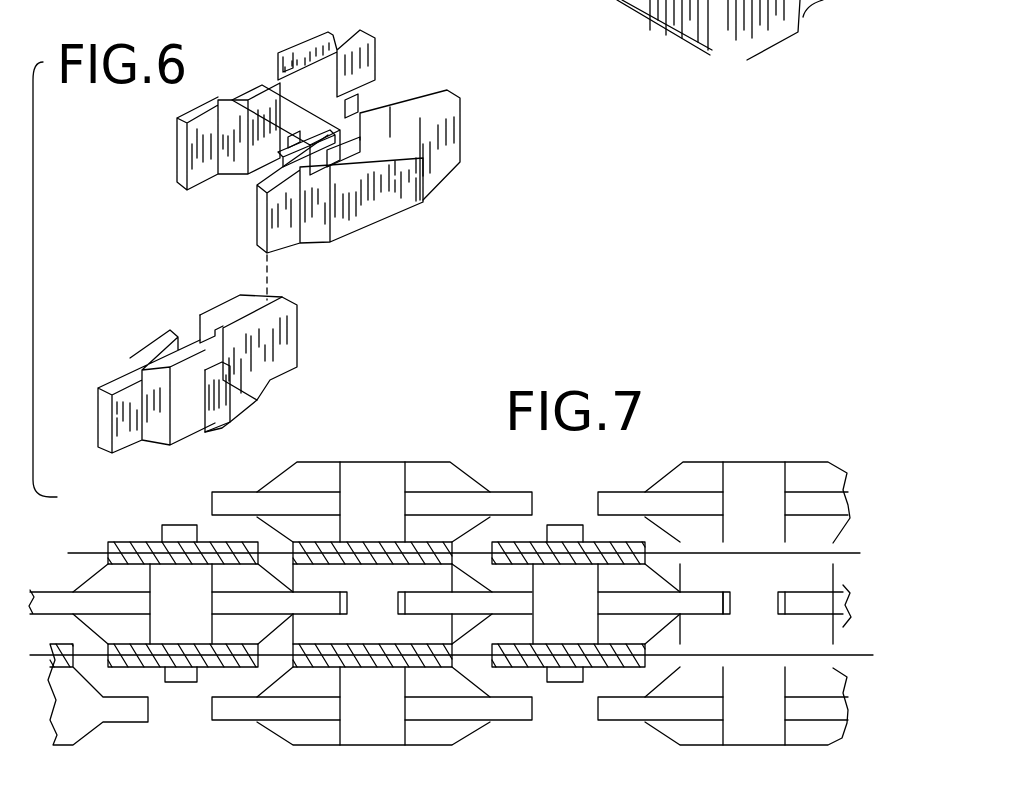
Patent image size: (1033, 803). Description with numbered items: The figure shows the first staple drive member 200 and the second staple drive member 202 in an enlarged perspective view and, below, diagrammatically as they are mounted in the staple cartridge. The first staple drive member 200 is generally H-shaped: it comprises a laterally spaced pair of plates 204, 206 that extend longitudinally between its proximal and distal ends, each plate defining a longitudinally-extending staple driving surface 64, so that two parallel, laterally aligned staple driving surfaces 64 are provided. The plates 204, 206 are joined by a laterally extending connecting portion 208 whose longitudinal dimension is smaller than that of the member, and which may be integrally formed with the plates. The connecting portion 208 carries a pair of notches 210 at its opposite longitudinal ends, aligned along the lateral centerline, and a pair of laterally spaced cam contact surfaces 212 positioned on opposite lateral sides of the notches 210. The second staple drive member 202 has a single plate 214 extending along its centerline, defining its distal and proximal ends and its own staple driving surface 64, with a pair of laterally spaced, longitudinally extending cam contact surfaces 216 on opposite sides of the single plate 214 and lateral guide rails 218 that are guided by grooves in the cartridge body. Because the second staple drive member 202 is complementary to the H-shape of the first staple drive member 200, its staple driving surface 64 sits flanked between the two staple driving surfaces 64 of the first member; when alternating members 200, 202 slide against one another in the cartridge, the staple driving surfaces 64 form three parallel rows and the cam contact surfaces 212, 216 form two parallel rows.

In FIG. 6, the staple driving surface 64 is at (297, 63).
In FIG. 7, the staple driving surface 64 is at (230, 603).
In FIG. 6, the first staple drive member 200 is at (420, 76).
In FIG. 7, the first staple drive member 200 is at (377, 456).
In FIG. 6, the second staple drive member 202 is at (105, 366).
In FIG. 7, the second staple drive member 202 is at (518, 672).
In FIG. 6, the plate 204 is at (182, 152).
In FIG. 7, the plate 204 is at (245, 503).
In FIG. 6, the plate 206 is at (453, 122).
In FIG. 7, the plate 206 is at (235, 703).
In FIG. 6, the connecting portion 208 is at (257, 173).
In FIG. 6, the notch 210 is at (290, 137).
In FIG. 7, the notch 210 is at (397, 603).
In FIG. 7, the cam contact surface 212 is at (457, 547).
In FIG. 6, the single plate 214 is at (293, 317).
In FIG. 7, the single plate 214 is at (657, 603).
In FIG. 7, the cam contact surface 216 is at (532, 542).
In FIG. 6, the lateral guide rail 218 is at (222, 418).
In FIG. 7, the lateral guide rail 218 is at (178, 537).